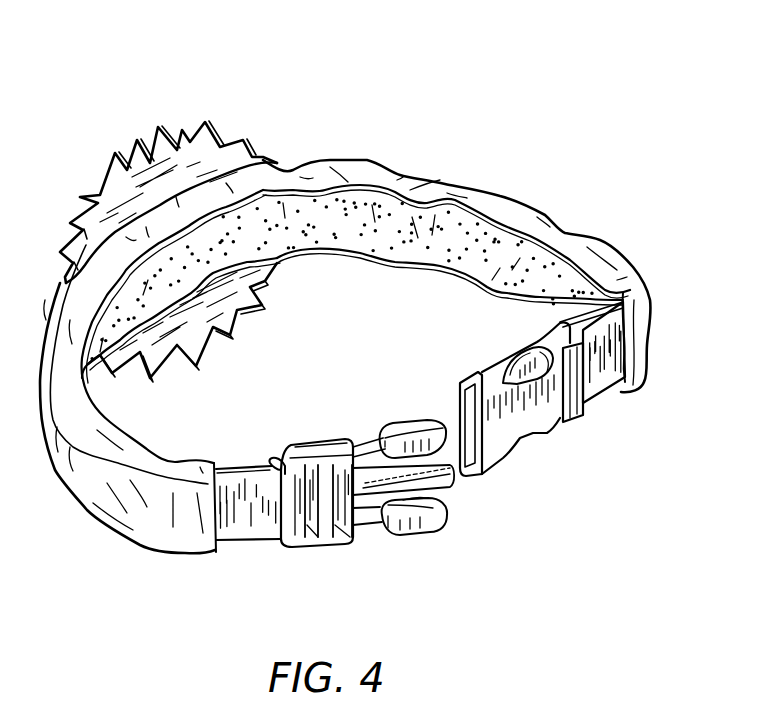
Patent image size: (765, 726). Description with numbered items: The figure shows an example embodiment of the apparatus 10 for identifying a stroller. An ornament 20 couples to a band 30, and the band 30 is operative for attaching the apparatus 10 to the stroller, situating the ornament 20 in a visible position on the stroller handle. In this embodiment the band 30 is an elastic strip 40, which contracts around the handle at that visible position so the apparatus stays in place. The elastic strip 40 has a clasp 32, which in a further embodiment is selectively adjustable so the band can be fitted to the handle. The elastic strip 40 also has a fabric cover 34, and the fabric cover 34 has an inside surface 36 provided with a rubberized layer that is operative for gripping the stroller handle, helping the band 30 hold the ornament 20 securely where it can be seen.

The apparatus 10 is at (143, 92).
The ornament 20 is at (181, 128).
The band 30 is at (487, 155).
The clasp 32 is at (432, 535).
The fabric cover 34 is at (566, 238).
The inside surface 36 is at (382, 190).
The elastic strip 40 is at (607, 384).